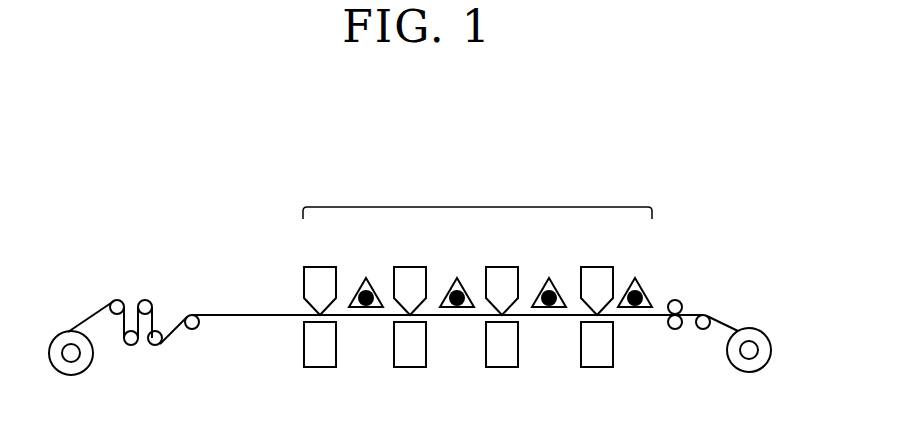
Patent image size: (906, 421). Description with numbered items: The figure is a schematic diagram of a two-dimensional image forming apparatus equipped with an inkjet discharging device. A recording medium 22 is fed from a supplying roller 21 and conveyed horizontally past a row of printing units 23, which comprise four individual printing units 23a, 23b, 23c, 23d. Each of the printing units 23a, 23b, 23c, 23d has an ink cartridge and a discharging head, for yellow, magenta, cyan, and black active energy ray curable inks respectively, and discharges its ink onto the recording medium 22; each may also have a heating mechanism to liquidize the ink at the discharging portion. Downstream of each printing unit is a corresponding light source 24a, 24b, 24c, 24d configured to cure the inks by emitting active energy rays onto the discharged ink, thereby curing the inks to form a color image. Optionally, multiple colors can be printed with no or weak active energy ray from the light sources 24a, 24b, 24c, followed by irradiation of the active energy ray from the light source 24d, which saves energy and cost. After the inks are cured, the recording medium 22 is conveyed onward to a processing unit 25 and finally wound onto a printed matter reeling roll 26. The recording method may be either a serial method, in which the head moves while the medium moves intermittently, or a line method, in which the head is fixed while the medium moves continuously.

The supplying roller 21 is at (70, 361).
The recording medium 22 is at (231, 314).
The printing units 23 is at (468, 207).
The printing unit 23a is at (321, 272).
The printing unit 23b is at (411, 272).
The printing unit 23c is at (503, 272).
The printing unit 23d is at (598, 272).
The light source 24a is at (368, 288).
The light source 24b is at (459, 288).
The light source 24c is at (551, 288).
The light source 24d is at (637, 288).
The processing unit 25 is at (676, 293).
The printed matter reeling roll 26 is at (748, 358).